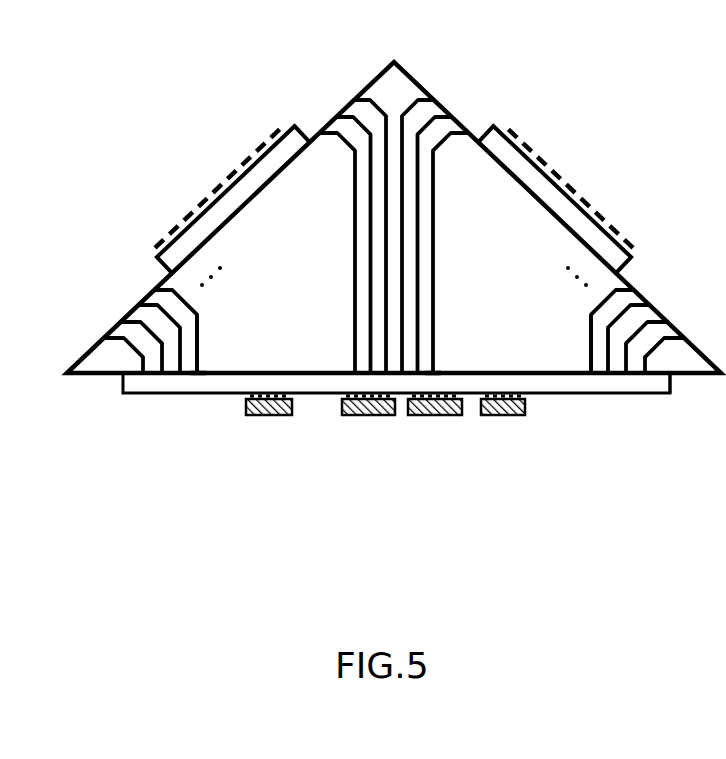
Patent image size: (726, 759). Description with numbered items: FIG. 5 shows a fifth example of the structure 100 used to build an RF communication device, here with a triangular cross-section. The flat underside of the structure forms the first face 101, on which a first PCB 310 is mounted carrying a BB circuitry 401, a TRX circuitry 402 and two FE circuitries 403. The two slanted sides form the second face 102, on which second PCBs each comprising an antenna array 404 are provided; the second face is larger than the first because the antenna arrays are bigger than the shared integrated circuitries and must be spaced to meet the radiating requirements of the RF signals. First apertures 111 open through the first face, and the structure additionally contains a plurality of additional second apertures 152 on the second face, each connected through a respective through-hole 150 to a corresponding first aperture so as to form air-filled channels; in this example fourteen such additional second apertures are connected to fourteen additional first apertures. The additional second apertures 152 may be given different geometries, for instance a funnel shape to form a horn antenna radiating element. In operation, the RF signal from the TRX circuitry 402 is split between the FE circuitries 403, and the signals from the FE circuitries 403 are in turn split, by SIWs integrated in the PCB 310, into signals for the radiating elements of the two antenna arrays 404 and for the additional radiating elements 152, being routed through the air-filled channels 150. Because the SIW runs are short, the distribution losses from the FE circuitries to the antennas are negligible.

The structure 100 is at (409, 77).
The first face 101 is at (151, 404).
The second face 102 is at (383, 41).
The first apertures 111 is at (200, 368).
The through-holes 150 is at (199, 342).
The additional second apertures 152 is at (338, 115).
The first PCB 310 is at (672, 387).
The BB circuitry 401 is at (367, 417).
The TRX circuitry 402 is at (417, 417).
The FE circuitries 403 is at (270, 417).
The antenna array 404 is at (394, 205).